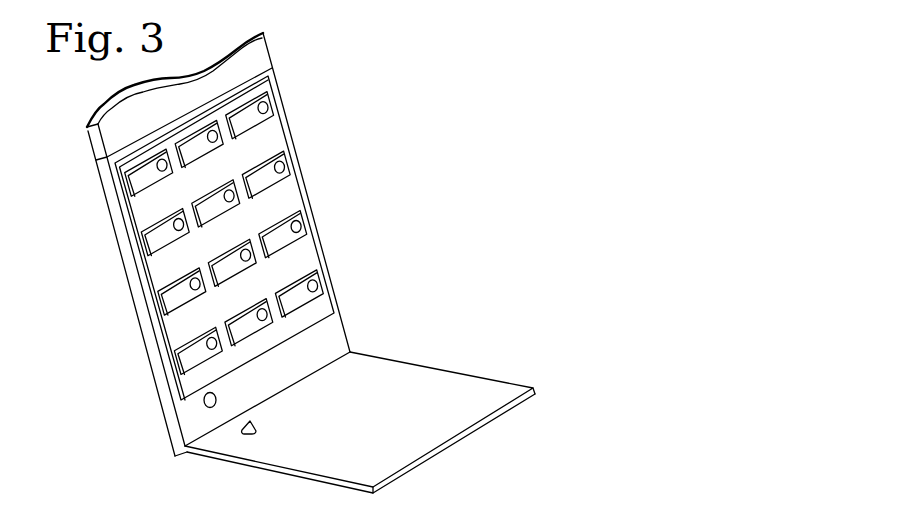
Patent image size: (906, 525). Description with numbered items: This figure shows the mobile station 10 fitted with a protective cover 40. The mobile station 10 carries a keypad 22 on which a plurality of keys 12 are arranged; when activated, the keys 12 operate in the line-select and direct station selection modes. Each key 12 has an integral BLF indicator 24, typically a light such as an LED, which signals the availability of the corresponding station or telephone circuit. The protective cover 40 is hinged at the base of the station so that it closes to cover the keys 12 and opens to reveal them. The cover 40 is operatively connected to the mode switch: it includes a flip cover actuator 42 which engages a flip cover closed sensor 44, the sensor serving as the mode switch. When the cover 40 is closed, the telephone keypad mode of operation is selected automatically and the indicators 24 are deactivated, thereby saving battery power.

The mobile station 10 is at (420, 92).
The key 12 is at (156, 240).
The keypad 22 is at (173, 333).
The BLF indicator 24 is at (283, 172).
The protective cover 40 is at (417, 436).
The flip cover actuator 42 is at (257, 428).
The flip cover closed sensor 44 is at (217, 399).